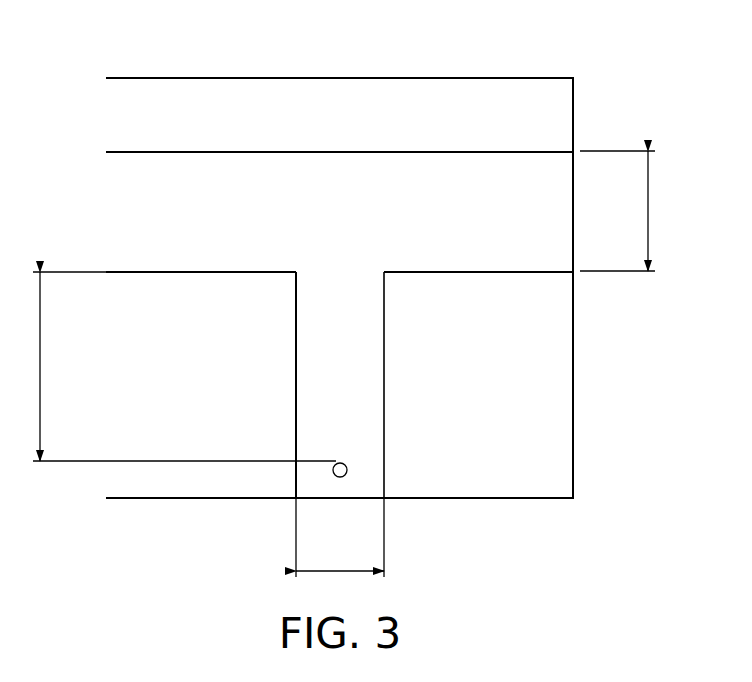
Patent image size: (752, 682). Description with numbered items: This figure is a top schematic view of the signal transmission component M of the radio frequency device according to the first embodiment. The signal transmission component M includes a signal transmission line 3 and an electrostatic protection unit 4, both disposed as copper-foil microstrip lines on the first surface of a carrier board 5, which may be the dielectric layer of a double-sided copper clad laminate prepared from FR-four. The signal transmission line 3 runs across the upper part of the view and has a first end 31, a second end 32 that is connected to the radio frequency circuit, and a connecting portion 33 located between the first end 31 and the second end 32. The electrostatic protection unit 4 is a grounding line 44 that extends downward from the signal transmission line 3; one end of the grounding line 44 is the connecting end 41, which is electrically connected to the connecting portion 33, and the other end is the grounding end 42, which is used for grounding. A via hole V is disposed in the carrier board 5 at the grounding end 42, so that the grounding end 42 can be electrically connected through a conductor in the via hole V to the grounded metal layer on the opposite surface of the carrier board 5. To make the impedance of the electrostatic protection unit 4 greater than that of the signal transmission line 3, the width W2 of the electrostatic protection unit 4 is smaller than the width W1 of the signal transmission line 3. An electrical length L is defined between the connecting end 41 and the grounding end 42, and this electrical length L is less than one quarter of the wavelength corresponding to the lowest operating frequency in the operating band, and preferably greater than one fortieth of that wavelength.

The signal transmission component M is at (127, 35).
The signal transmission line 3 is at (331, 189).
The first end 31 is at (537, 168).
The second end 32 is at (127, 214).
The connecting portion 33 is at (340, 172).
The electrostatic protection unit 4 is at (335, 385).
The connecting end 41 is at (340, 277).
The grounding end 42 is at (350, 457).
The grounding line 44 is at (357, 380).
The carrier board 5 is at (571, 350).
The via hole V is at (333, 473).
The width of the signal transmission line W1 is at (617, 211).
The width of the electrostatic protection unit W2 is at (340, 537).
The electrical length L is at (172, 366).